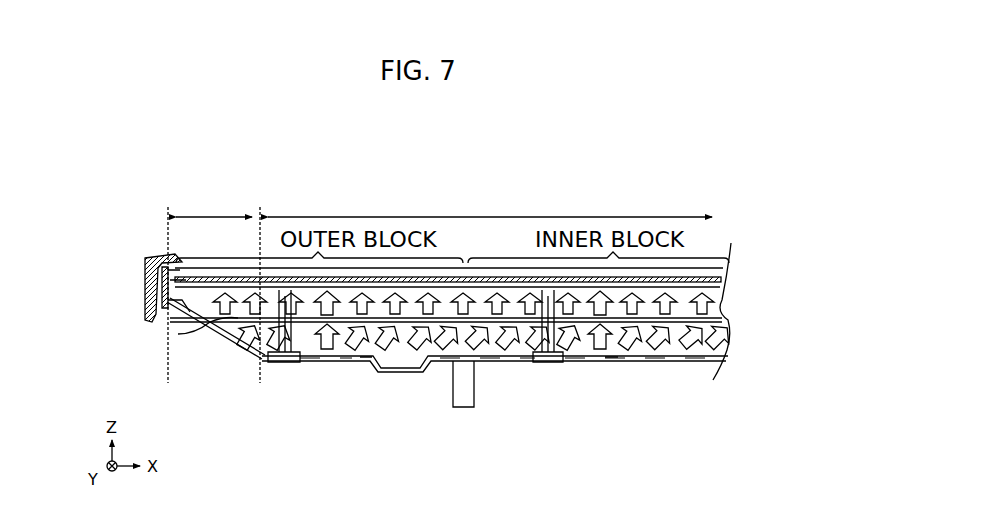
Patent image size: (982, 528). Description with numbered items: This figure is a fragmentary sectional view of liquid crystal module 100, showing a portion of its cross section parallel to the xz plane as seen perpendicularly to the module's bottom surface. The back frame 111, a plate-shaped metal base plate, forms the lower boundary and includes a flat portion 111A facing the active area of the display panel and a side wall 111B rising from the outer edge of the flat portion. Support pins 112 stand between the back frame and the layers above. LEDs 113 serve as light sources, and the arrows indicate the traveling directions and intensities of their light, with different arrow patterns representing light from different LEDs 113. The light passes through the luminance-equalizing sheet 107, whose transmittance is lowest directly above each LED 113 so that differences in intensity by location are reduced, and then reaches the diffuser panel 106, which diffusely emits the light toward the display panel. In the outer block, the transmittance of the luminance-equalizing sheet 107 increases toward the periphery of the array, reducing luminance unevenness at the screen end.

The liquid crystal module 100 is at (728, 198).
The diffuser panel 106 is at (158, 266).
The luminance-equalizing sheet 107 is at (178, 334).
The back frame 111 is at (246, 348).
The flat portion 111A is at (511, 216).
The side wall 111B is at (217, 216).
The support pins 112 is at (290, 363).
The LEDs 113 is at (341, 359).